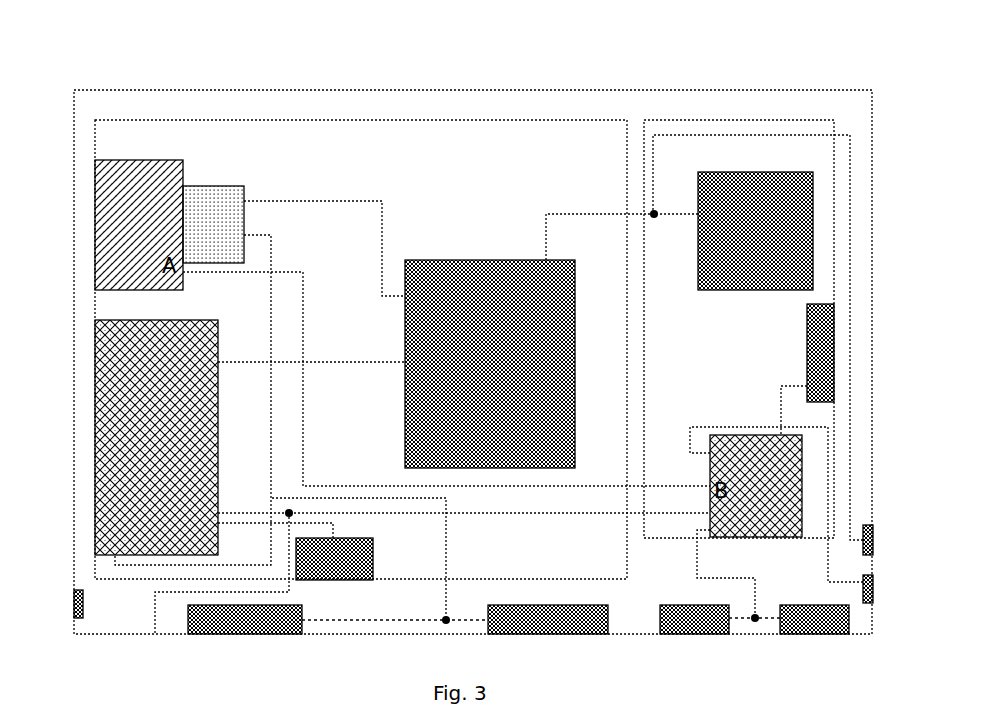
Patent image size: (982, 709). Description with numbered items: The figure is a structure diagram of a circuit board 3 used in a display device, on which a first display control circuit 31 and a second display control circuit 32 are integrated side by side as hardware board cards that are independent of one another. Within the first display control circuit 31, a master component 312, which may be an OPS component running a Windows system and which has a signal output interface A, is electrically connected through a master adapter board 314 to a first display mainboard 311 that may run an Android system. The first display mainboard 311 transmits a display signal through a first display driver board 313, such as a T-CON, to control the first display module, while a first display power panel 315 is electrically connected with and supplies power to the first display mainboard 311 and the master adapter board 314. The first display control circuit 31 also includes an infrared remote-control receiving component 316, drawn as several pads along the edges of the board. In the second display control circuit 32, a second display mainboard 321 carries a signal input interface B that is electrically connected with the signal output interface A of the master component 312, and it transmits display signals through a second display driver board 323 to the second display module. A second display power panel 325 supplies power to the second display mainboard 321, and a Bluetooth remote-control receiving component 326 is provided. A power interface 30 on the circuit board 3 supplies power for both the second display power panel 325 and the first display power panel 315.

The circuit board 3 is at (862, 90).
The first display control circuit 31 is at (440, 120).
The second display control circuit 32 is at (718, 120).
The first display mainboard 311 is at (203, 320).
The master component 312 is at (137, 177).
The first display driver board 313 is at (380, 532).
The master adapter board 314 is at (222, 186).
The first display power panel 315 is at (468, 260).
The infrared remote-control receiving component 316 is at (73, 592).
The second display mainboard 321 is at (710, 463).
The second display driver board 323 is at (807, 356).
The second display power panel 325 is at (755, 172).
The power interface 30 is at (876, 528).
The Bluetooth remote-control receiving component 326 is at (876, 580).